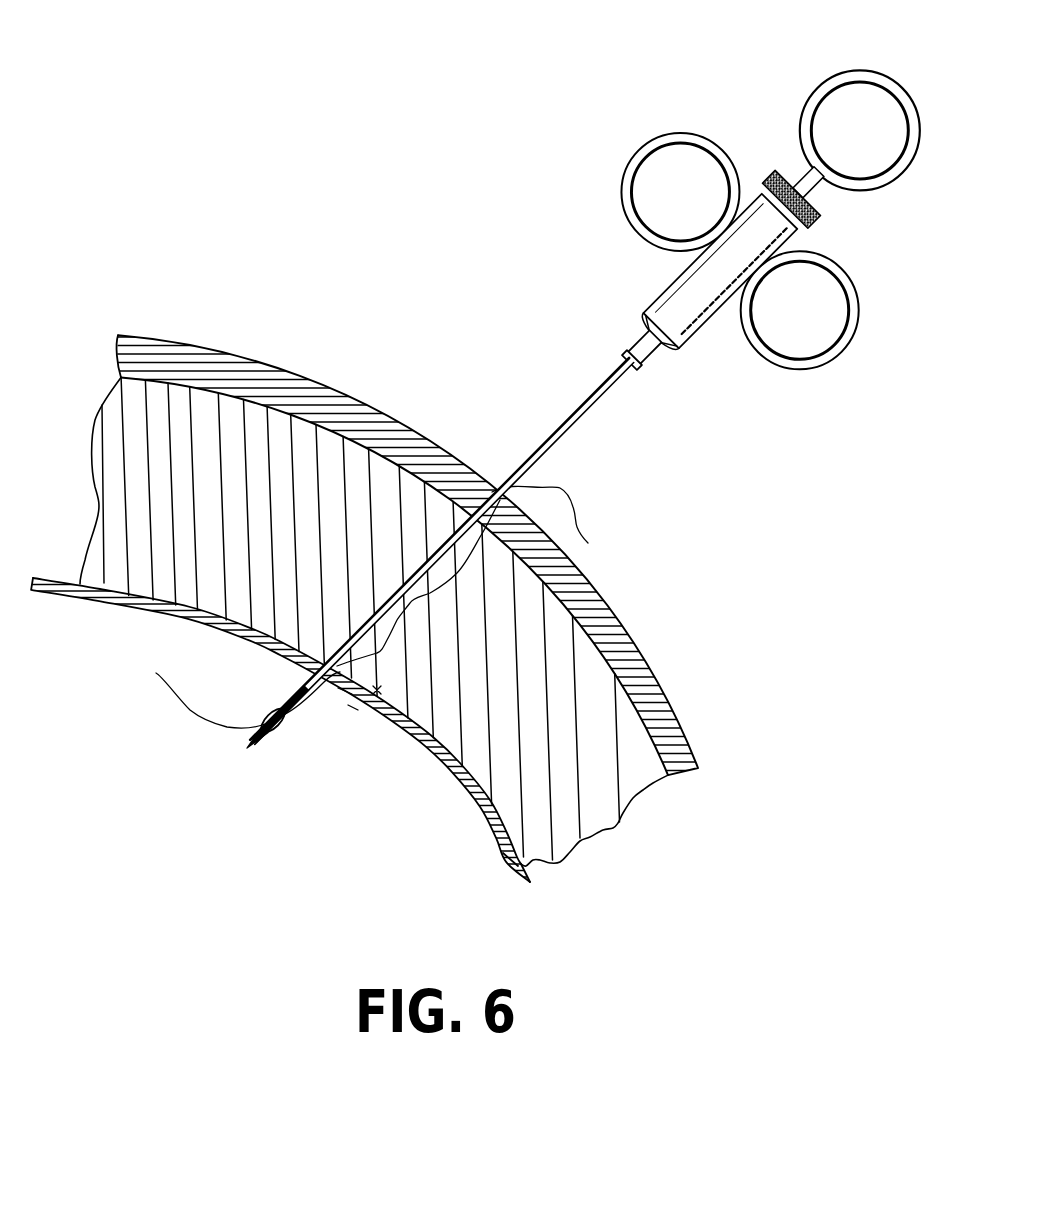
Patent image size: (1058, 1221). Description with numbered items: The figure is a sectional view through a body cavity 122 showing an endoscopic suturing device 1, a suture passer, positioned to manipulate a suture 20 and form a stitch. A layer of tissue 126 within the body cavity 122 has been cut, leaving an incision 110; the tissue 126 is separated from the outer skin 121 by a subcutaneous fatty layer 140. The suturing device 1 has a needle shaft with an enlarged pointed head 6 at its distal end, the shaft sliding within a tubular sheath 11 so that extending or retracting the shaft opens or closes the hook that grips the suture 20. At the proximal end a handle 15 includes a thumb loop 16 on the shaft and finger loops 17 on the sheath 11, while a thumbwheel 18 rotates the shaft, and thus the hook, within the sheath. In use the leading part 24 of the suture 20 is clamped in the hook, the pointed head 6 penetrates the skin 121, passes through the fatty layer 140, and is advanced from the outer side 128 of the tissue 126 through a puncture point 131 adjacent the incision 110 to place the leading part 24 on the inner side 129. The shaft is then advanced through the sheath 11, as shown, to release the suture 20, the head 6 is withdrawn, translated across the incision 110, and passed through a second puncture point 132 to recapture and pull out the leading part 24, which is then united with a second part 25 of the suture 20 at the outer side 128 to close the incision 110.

The suturing device 1 is at (594, 414).
The pointed head 6 is at (255, 750).
The tubular sheath 11 is at (540, 447).
The handle 15 is at (862, 61).
The thumb loop 16 is at (871, 195).
The finger loops 17 is at (681, 134).
The thumbwheel 18 is at (771, 172).
The suture 20 is at (313, 720).
The leading part of the suture 24 is at (156, 673).
The second part of the suture 25 is at (588, 541).
The incision 110 is at (352, 707).
The outer skin 121 is at (692, 722).
The body cavity 122 is at (392, 872).
The tissue layer 126 is at (526, 880).
The outer side of the tissue 128 is at (547, 862).
The inner side of the tissue 129 is at (509, 871).
The first puncture point 131 is at (345, 688).
The second puncture point 132 is at (380, 694).
The subcutaneous fatty layer 140 is at (628, 770).